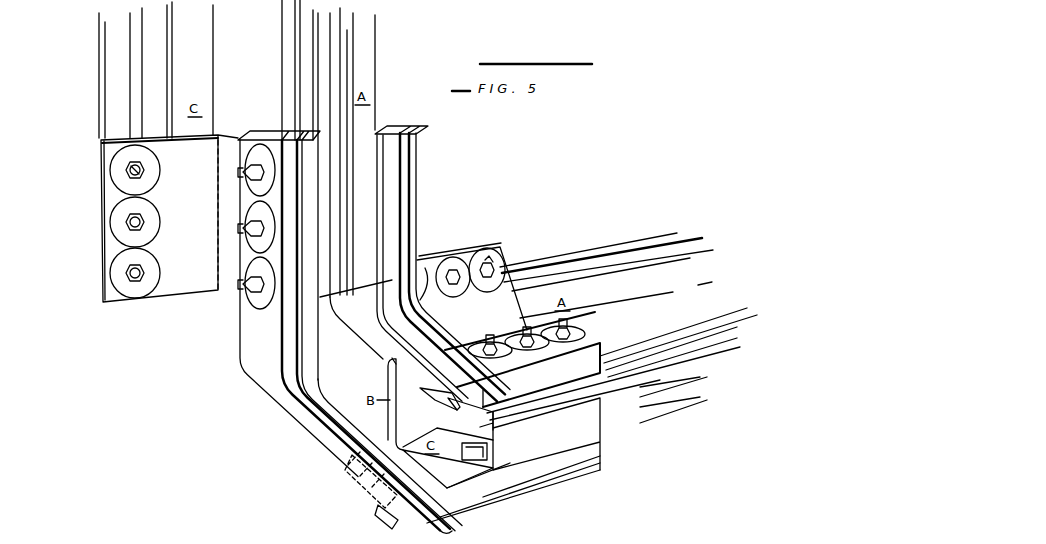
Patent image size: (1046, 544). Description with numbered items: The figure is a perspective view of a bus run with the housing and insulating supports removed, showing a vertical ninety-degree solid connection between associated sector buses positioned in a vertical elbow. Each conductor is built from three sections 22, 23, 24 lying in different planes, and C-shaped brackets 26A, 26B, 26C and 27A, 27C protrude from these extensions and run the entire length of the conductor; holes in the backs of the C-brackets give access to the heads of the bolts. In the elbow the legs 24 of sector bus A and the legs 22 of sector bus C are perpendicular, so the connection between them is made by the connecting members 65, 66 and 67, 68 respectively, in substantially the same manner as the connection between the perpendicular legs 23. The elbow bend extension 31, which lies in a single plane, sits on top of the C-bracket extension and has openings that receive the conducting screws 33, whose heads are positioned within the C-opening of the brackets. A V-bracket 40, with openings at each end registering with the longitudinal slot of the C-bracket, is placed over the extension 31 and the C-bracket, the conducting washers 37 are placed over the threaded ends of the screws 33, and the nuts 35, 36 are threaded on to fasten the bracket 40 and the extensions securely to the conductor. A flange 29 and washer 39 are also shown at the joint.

The section 22 is at (287, 86).
The section 23 is at (648, 330).
The section 24 is at (117, 73).
The C-shaped bracket 26A is at (613, 237).
The C-shaped bracket 26B is at (367, 484).
The C-shaped bracket 26C is at (538, 461).
The C-shaped bracket 27A is at (545, 410).
The C-shaped bracket 27C is at (390, 518).
The flange 29 is at (391, 361).
The elbow bend extension 31 is at (246, 174).
The conducting screw 33 is at (146, 167).
The nut 35 is at (146, 171).
The nut 36 is at (247, 181).
The conducting washer 37 is at (150, 184).
The washer 39 is at (494, 262).
The V-bracket 40 is at (200, 263).
The connecting member 65 is at (432, 332).
The connecting member 66 is at (405, 334).
The connecting member 67 is at (330, 391).
The connecting member 68 is at (313, 405).